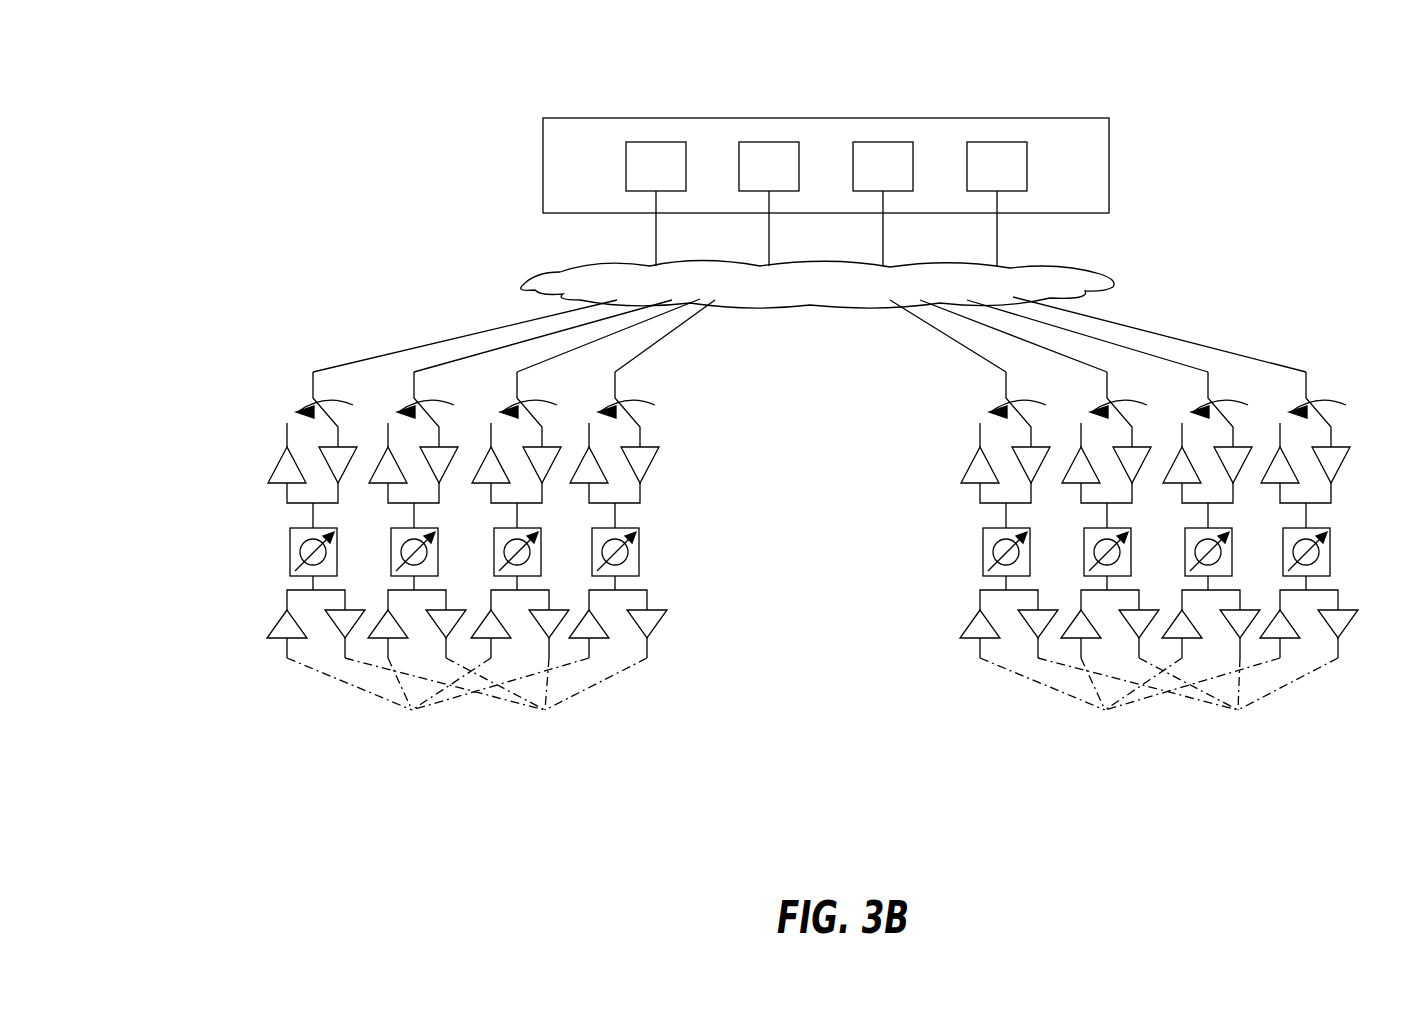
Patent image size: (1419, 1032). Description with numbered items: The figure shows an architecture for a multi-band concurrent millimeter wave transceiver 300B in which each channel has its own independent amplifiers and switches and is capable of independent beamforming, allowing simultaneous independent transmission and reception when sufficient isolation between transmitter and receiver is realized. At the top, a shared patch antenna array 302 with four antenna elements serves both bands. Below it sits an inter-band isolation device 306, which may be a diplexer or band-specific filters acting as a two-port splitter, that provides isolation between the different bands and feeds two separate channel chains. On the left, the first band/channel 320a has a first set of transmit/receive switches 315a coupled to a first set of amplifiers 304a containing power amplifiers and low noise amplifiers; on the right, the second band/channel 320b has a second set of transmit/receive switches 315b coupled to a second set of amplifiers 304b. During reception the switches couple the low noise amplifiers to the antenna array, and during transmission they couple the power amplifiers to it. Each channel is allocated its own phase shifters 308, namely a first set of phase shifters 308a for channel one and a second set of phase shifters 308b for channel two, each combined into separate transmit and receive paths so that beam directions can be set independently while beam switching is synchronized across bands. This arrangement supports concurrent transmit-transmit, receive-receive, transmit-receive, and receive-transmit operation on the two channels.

The multi-band concurrent millimeter wave transceiver 300B is at (604, 94).
The antenna array 302 is at (462, 233).
The inter-band isolation device 306 is at (462, 325).
The first set of amplifiers 304a is at (261, 408).
The second set of amplifiers 304b is at (934, 430).
The first set of transmit/receive switches 315a is at (665, 388).
The second set of transmit/receive switches 315b is at (1349, 380).
The phase shifters 308 is at (426, 669).
The first set of phase shifters 308a is at (518, 643).
The second set of phase shifters 308b is at (1093, 650).
The first band/channel 320a is at (426, 583).
The second band/channel 320b is at (1110, 582).